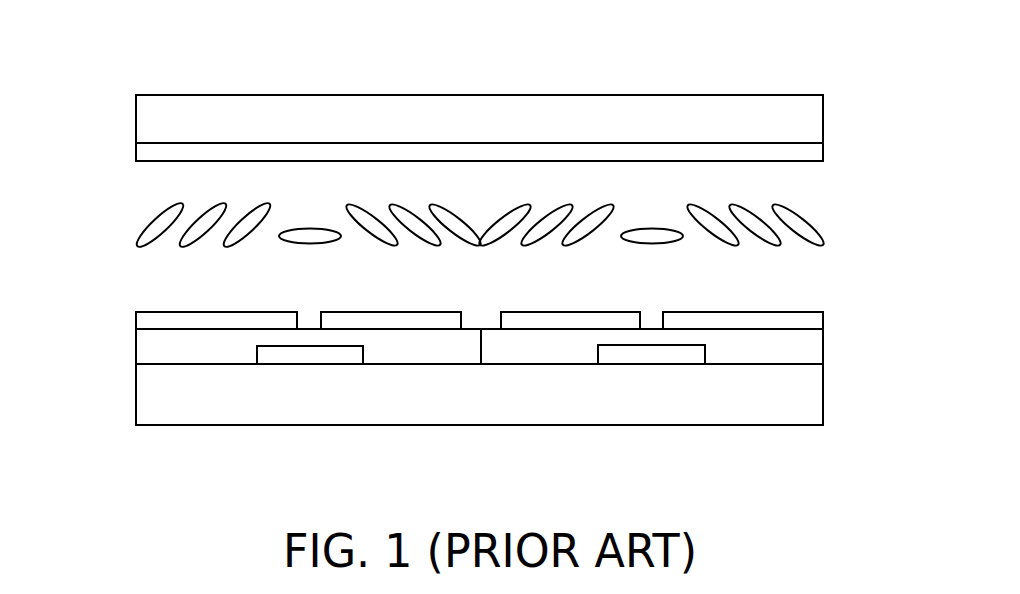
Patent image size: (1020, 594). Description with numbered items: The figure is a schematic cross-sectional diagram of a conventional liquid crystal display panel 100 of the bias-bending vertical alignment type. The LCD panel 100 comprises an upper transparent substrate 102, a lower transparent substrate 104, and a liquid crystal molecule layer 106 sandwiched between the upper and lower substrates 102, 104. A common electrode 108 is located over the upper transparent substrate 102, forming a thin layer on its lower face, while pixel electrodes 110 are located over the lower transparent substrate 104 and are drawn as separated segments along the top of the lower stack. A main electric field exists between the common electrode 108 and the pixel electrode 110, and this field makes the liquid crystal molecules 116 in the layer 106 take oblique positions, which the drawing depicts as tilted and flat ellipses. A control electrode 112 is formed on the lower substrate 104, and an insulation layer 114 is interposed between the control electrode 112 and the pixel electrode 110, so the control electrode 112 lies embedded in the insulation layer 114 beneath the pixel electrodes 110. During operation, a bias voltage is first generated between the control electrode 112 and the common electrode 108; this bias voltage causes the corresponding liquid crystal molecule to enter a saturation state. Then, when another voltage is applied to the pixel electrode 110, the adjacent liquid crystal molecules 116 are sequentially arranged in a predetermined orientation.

The LCD panel 100 is at (210, 85).
The upper transparent substrate 102 is at (148, 109).
The lower transparent substrate 104 is at (150, 391).
The liquid crystal molecule layer 106 is at (494, 235).
The common electrode 108 is at (148, 152).
The pixel electrodes 110 is at (152, 321).
The control electrode 112 is at (315, 355).
The insulation layer 114 is at (152, 349).
The liquid crystal molecules 116 is at (310, 240).